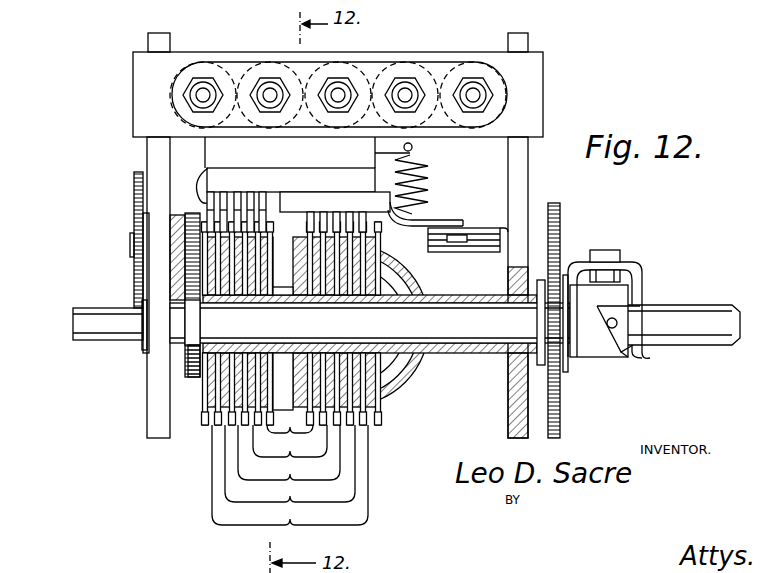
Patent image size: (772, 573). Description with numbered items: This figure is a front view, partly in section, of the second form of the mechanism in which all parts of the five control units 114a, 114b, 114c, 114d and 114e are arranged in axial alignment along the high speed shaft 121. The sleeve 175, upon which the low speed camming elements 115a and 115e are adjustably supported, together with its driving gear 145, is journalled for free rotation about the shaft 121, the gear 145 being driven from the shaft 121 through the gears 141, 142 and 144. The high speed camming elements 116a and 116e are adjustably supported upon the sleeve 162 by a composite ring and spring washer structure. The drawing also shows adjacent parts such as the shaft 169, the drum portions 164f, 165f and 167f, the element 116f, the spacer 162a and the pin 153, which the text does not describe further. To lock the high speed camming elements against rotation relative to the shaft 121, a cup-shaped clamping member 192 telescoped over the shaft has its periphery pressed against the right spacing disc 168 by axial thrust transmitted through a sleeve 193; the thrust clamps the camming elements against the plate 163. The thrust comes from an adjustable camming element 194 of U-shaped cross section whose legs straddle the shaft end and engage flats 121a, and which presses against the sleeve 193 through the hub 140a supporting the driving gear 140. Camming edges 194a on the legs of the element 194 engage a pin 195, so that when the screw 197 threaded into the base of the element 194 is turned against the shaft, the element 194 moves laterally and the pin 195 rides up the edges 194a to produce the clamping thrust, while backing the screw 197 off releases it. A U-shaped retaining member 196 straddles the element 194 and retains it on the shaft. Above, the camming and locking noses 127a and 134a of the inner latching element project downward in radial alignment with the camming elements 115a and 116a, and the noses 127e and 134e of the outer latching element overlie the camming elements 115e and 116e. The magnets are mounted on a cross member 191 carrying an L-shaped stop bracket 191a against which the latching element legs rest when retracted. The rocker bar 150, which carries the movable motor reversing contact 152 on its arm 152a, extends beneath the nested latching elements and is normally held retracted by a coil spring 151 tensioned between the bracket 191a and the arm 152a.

The cross member 191 is at (347, 52).
The L-shaped stop bracket 191a is at (440, 70).
The gear 141 is at (103, 308).
The gear 142 is at (134, 192).
The gear 144 is at (190, 213).
The driving gear 145 is at (193, 380).
The main shaft 169 is at (392, 323).
The low speed camming element 115e is at (205, 408).
The low speed camming element 115a is at (282, 368).
The sleeve 175 is at (277, 289).
The cam drum 164f is at (418, 290).
The cam ring 165f is at (393, 262).
The cam ring 167f is at (412, 276).
The contact 116f is at (385, 252).
The right spacing disc 168 is at (384, 240).
The camming nose 127a is at (264, 205).
The camming nose 127e is at (208, 170).
The locking nose 134a is at (335, 212).
The rocker bar 150 is at (330, 200).
The locking nose 134e is at (360, 215).
The high speed camming element 116a is at (300, 242).
The coil spring 151 is at (427, 176).
The arm 152a is at (433, 217).
The movable motor reversing contact 152 is at (460, 221).
The pin 153 is at (462, 246).
The high speed shaft 121 is at (500, 335).
The cup-shaped clamping member 192 is at (416, 363).
The sleeve 193 is at (482, 355).
The spacer 162a is at (415, 390).
The sleeve 162 is at (381, 403).
The high speed camming element 116e is at (383, 410).
The plate 163 is at (290, 427).
The control unit 114a is at (290, 441).
The control unit 114b is at (289, 453).
The control unit 114c is at (290, 464).
The control unit 114d is at (290, 476).
The control unit 114e is at (263, 488).
The driving gear 140 is at (561, 233).
The gear hub 140a is at (566, 372).
The adjustable camming element 194 is at (594, 350).
The flats 121a is at (687, 318).
The U-shaped retaining member 196 is at (640, 288).
The screw 197 is at (613, 250).
The pin 195 is at (616, 328).
The camming edges 194a is at (621, 352).